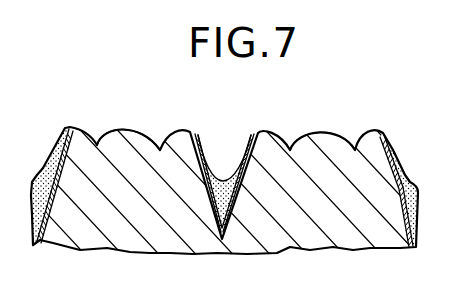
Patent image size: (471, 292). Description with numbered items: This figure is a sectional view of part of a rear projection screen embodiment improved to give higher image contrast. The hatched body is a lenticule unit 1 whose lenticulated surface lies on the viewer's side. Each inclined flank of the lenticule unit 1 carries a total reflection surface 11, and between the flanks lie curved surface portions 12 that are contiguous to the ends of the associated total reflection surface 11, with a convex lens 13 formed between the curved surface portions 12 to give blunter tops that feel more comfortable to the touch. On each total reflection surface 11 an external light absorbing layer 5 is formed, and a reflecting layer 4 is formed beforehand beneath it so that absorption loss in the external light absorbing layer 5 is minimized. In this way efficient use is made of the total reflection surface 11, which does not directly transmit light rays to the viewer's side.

The lenticule unit 1 is at (397, 48).
The reflecting layer 4 is at (419, 192).
The external light absorbing layer 5 is at (414, 212).
The total reflection surface 11 is at (399, 146).
The curved surface portion 12 is at (384, 153).
The convex lens 13 is at (320, 132).